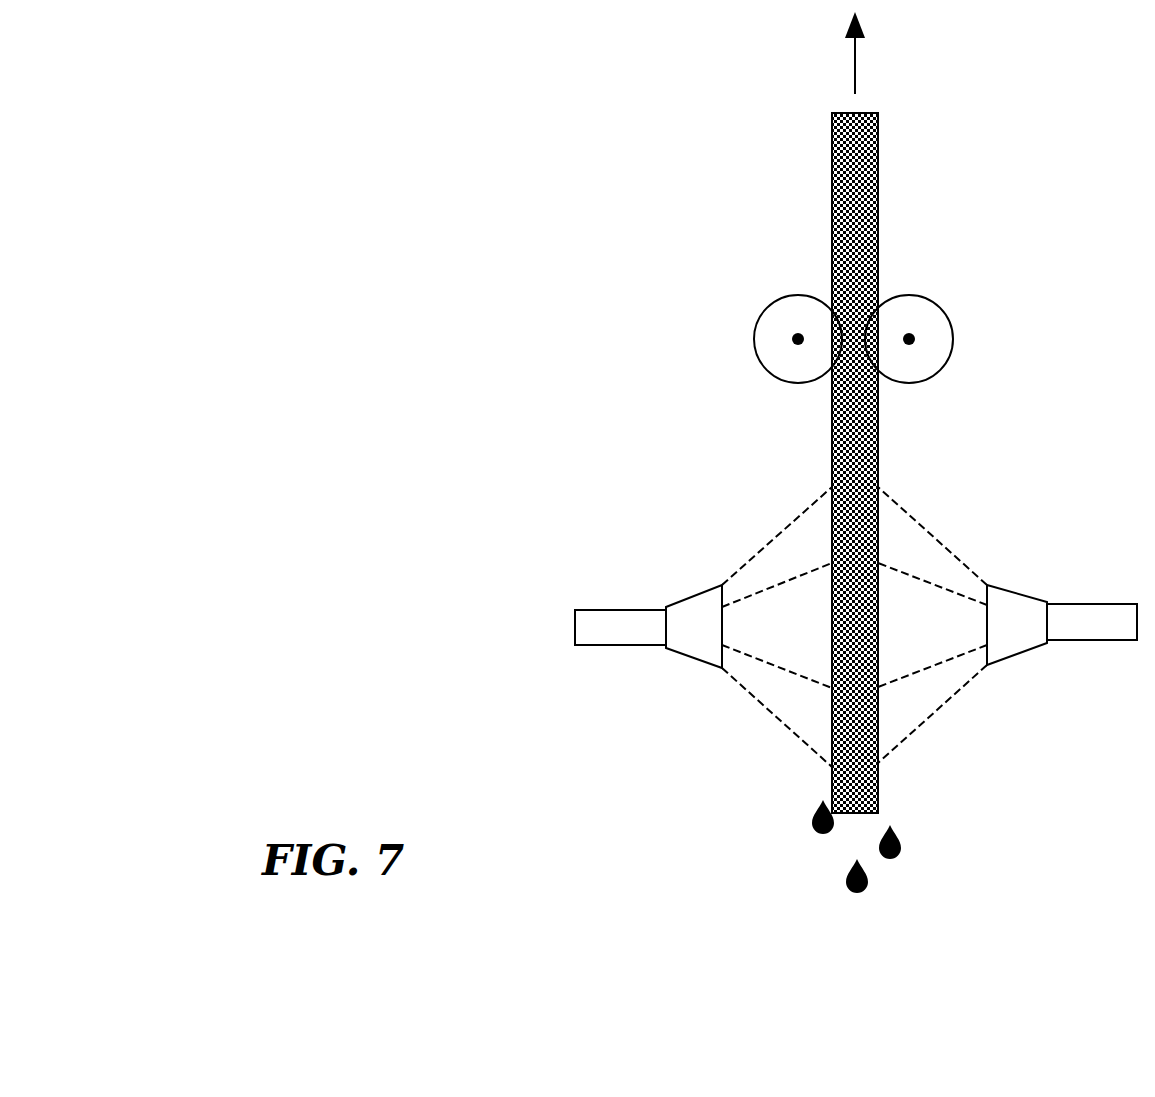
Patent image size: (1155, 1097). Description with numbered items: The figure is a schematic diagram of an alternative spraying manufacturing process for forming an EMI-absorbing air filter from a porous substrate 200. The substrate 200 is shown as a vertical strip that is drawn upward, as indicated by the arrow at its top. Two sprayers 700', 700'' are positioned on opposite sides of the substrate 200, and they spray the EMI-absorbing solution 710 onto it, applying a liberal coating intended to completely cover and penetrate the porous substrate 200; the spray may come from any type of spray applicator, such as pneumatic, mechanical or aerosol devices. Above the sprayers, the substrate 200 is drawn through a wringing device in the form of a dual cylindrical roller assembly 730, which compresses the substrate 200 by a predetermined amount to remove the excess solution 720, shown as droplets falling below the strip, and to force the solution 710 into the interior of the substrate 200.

The porous substrate 200 is at (830, 153).
The dual cylindrical roller assembly 730 is at (748, 338).
The sprayer 700' is at (648, 682).
The sprayer 700'' is at (1067, 684).
The EMI-absorbing solution 710 is at (944, 524).
The excess solution 720 is at (803, 858).